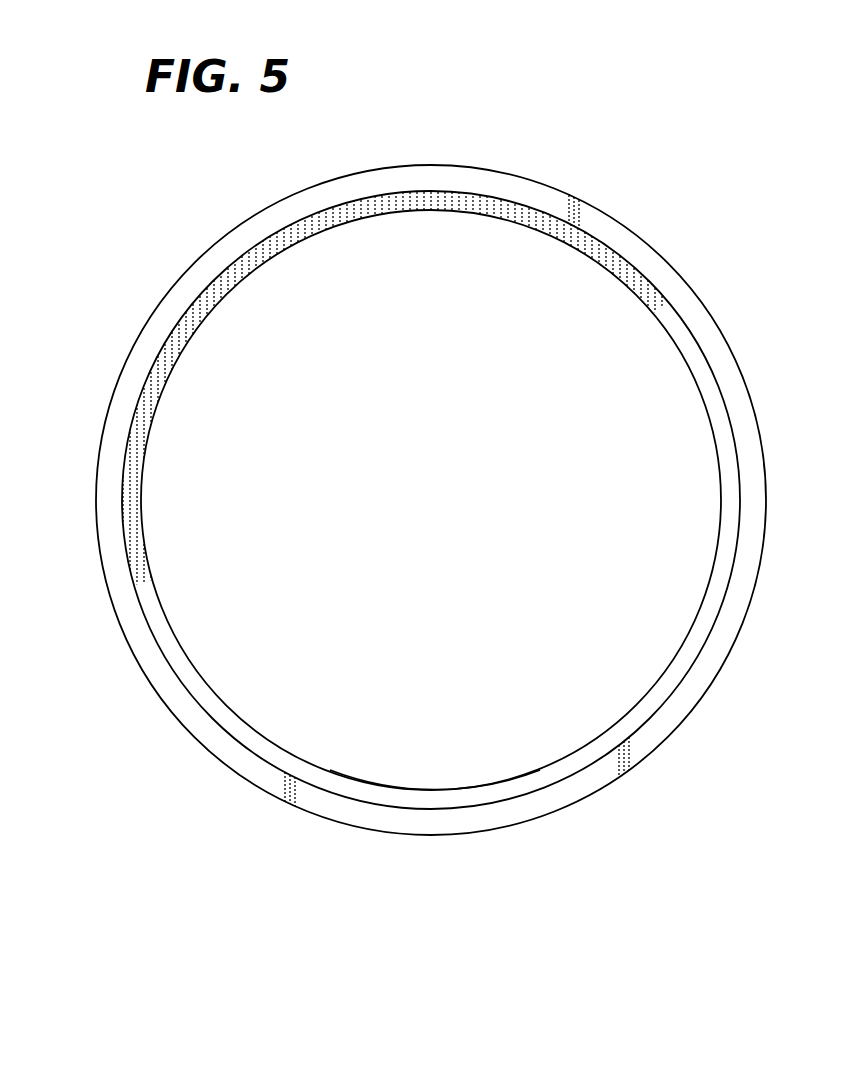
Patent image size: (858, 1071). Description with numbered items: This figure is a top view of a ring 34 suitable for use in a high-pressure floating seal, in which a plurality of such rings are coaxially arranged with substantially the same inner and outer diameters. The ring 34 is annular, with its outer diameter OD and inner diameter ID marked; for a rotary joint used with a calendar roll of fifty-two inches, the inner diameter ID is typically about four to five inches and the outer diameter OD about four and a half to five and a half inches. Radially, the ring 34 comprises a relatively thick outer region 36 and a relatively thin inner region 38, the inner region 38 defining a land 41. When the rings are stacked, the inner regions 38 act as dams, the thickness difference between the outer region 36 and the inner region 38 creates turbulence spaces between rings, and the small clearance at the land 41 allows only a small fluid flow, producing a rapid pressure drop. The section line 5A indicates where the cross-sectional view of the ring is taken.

The ring 34 is at (650, 160).
The outer region 36 is at (553, 205).
The inner region 38 is at (725, 542).
The land 41 is at (453, 788).
The outer diameter OD is at (687, 280).
The inner diameter ID is at (693, 362).
The section line 5A- 5A is at (433, 121).